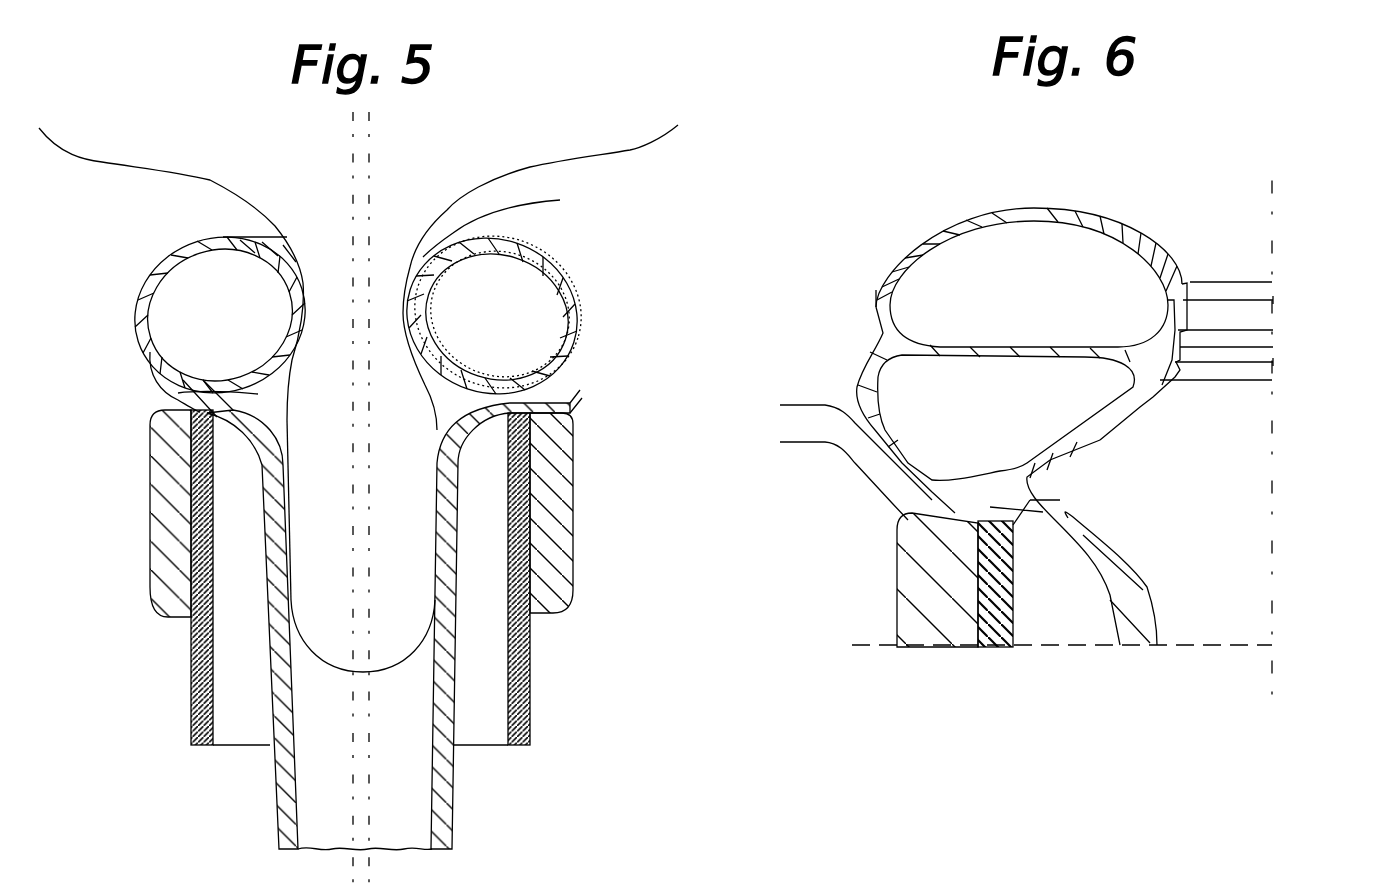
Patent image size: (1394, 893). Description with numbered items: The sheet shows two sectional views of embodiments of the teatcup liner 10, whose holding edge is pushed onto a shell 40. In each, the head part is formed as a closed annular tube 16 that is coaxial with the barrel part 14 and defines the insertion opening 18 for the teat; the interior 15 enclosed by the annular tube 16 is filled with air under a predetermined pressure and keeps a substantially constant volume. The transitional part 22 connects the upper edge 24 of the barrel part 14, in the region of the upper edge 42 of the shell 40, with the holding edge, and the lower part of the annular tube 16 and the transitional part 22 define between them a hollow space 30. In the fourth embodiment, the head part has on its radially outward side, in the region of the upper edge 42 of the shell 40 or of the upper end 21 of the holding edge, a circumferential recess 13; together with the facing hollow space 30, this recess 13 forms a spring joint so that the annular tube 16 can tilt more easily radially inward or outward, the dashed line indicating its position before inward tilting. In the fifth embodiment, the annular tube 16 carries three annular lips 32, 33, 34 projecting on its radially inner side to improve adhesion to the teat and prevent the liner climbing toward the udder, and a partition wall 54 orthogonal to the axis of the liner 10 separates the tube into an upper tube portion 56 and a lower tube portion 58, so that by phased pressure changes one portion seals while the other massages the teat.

In FIG. 5, the liner 10 is at (558, 282).
In FIG. 6, the liner 10 is at (897, 252).
In FIG. 5, the recess 13 is at (168, 398).
In FIG. 5, the barrel part 14 is at (282, 690).
In FIG. 5, the interior 15 is at (510, 327).
In FIG. 5, the annular tube 16 is at (573, 297).
In FIG. 6, the annular tube 16 is at (877, 296).
In FIG. 5, the insertion opening 18 is at (560, 198).
In FIG. 5, the upper end of the holding edge 21 is at (173, 416).
In FIG. 5, the transitional part 22 is at (557, 387).
In FIG. 6, the transitional part 22 is at (825, 405).
In FIG. 5, the upper edge of the barrel part 24 is at (437, 478).
In FIG. 5, the hollow space 30 is at (140, 353).
In FIG. 6, the hollow space 30 is at (1048, 490).
In FIG. 6, the annular lip 32 is at (1183, 284).
In FIG. 6, the annular lip 33 is at (1183, 328).
In FIG. 6, the annular lip 34 is at (1177, 368).
In FIG. 5, the shell 40 is at (202, 725).
In FIG. 6, the shell 40 is at (995, 584).
In FIG. 5, the upper edge of the shell 42 is at (572, 410).
In FIG. 6, the upper edge of the shell 42 is at (825, 442).
In FIG. 6, the partition wall 54 is at (1040, 349).
In FIG. 6, the upper tube portion 56 is at (1040, 270).
In FIG. 6, the lower tube portion 58 is at (1040, 418).